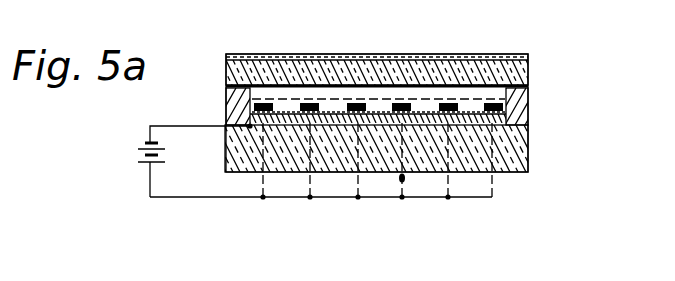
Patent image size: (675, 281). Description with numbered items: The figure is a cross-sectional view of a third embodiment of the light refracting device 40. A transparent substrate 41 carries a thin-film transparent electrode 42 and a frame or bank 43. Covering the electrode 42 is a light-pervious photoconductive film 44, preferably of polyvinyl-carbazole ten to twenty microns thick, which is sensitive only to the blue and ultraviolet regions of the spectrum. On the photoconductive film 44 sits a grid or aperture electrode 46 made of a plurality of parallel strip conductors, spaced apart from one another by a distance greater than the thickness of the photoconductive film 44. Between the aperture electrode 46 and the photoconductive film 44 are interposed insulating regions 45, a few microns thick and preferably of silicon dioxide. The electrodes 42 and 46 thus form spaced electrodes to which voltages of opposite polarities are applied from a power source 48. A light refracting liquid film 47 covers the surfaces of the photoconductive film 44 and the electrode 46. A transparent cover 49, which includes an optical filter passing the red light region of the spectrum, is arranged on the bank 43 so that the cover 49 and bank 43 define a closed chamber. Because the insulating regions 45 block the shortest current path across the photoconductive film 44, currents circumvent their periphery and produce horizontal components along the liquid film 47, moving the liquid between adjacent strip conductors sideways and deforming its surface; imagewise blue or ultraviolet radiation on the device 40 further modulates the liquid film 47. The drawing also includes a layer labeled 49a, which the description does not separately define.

The light refracting device 40 is at (427, 44).
The transparent substrate 41 is at (511, 171).
The transparent electrode 42 is at (487, 128).
The frame or bank 43 is at (528, 105).
The light-pervious photoconductive film 44 is at (225, 118).
The insulating regions 45 is at (335, 103).
The grid or aperture electrode 46 is at (227, 57).
The light refracting liquid film 47 is at (483, 101).
The power source 48 is at (136, 162).
The transparent cover 49 is at (227, 67).
The transparent electrode 49a is at (277, 103).